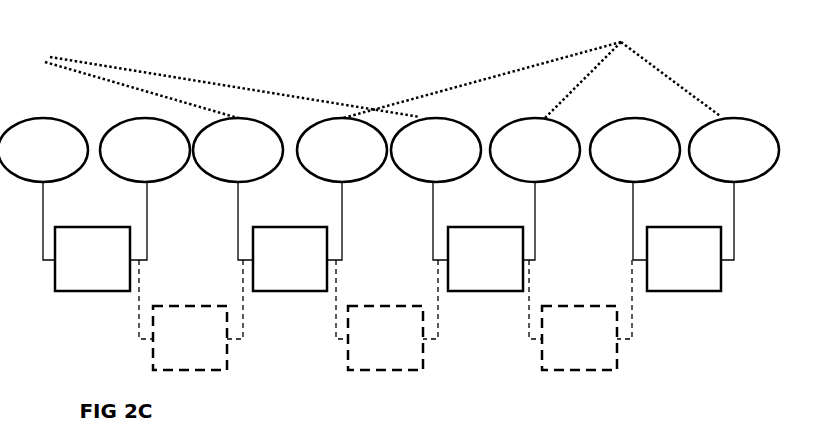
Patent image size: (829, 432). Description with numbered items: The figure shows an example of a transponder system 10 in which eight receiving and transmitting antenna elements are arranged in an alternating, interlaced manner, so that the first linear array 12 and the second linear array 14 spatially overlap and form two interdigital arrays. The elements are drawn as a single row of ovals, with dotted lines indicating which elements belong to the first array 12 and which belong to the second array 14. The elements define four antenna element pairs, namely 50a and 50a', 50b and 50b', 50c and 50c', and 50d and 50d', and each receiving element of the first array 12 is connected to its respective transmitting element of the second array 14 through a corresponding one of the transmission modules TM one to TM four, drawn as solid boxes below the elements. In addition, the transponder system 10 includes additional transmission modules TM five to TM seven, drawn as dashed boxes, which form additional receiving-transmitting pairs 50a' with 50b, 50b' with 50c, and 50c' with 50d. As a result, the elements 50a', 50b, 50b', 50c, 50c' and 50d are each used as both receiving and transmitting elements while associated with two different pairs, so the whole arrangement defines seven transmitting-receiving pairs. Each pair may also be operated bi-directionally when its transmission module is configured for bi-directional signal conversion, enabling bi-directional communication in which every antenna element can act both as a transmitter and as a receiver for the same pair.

The transponder system 10 is at (716, 89).
The first linear array 12 is at (43, 118).
The second linear array 14 is at (531, 67).
The antenna element 50a is at (44, 150).
The antenna element 50a' is at (145, 150).
The antenna element 50b is at (238, 150).
The antenna element 50b' is at (342, 150).
The antenna element 50c is at (436, 150).
The antenna element 50c' is at (535, 150).
The antenna element 50d is at (635, 150).
The antenna element 50d' is at (734, 150).